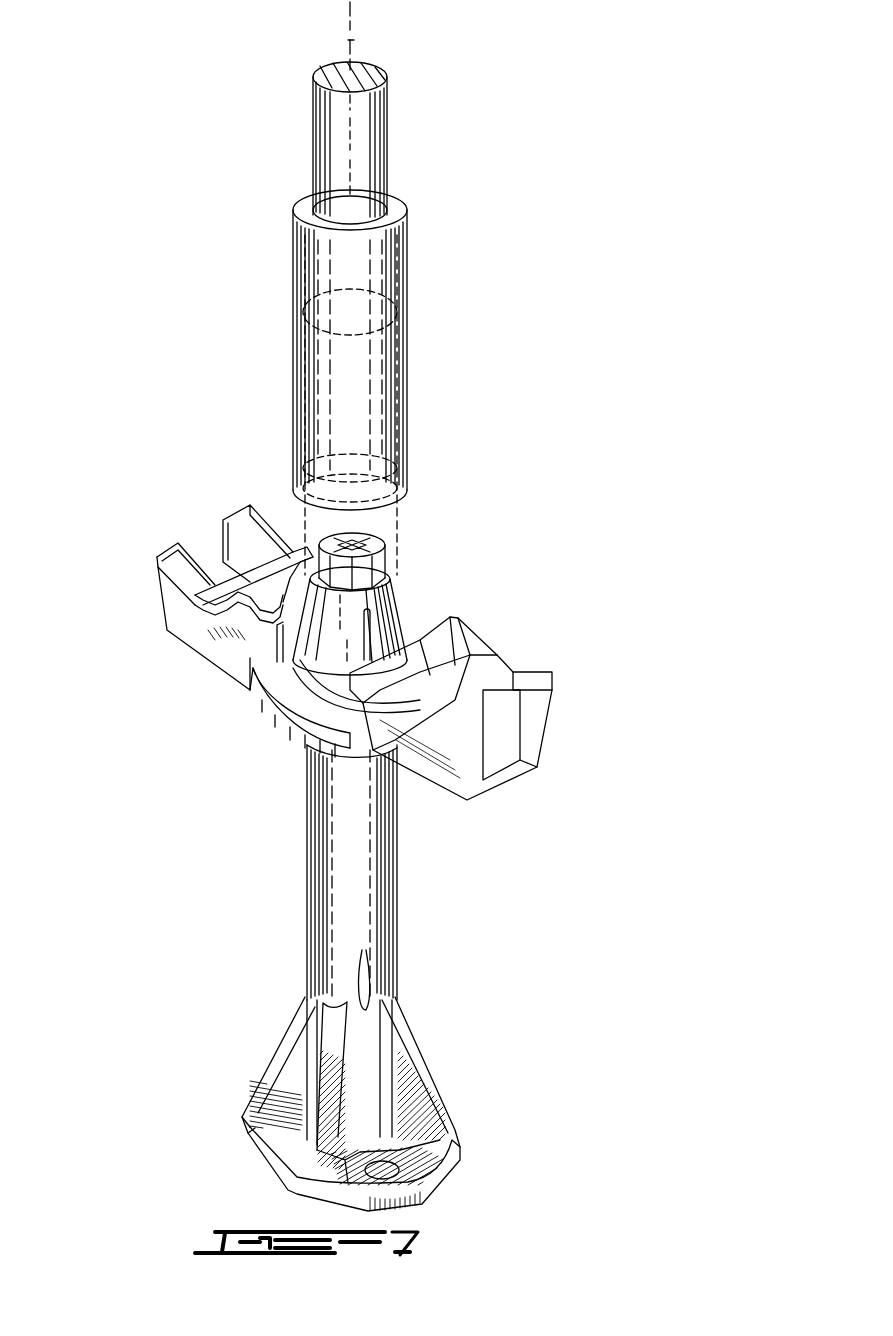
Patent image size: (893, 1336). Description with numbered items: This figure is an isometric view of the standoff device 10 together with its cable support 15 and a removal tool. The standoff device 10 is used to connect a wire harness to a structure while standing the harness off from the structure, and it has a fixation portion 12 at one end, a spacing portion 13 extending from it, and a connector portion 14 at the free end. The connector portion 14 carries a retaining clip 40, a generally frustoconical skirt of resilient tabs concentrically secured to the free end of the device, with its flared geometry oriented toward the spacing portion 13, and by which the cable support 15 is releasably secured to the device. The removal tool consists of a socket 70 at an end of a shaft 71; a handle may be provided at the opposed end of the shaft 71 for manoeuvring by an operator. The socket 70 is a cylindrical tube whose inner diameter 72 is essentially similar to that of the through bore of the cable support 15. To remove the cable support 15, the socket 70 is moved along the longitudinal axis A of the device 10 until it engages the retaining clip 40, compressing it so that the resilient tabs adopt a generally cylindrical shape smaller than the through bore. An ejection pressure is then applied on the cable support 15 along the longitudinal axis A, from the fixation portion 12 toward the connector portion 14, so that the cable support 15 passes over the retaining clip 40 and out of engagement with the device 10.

The longitudinal axis A is at (352, 38).
The shaft 71 is at (388, 132).
The socket 70 is at (410, 262).
The inner diameter 72 is at (235, 390).
The connector portion 14 is at (307, 650).
The retaining clip 40 is at (405, 608).
The cable support 15 is at (167, 643).
The spacing portion 13 is at (292, 877).
The fixation portion 12 is at (250, 1060).
The standoff device 10 is at (130, 808).